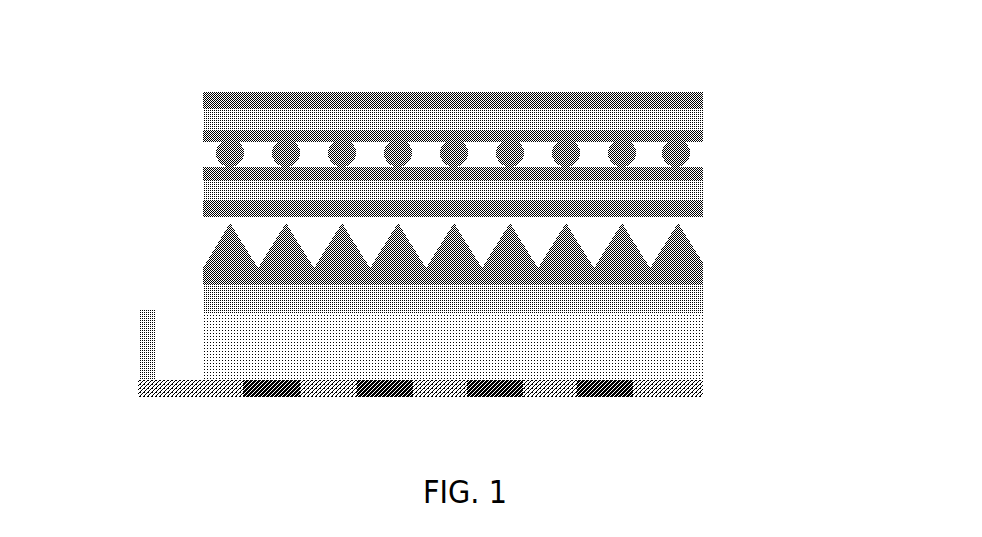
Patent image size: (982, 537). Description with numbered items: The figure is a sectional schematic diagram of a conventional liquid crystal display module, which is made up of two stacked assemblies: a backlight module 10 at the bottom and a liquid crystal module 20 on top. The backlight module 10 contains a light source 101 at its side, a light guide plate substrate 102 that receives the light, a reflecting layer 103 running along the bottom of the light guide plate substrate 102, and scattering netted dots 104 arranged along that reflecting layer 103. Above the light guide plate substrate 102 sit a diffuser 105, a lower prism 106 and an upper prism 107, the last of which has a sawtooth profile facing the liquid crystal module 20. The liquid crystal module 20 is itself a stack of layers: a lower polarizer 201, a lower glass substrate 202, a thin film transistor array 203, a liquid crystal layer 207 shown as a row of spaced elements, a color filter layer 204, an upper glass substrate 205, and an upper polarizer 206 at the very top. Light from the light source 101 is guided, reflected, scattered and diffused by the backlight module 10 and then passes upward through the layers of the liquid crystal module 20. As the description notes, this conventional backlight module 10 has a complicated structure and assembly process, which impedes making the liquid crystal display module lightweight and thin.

The backlight module 10 is at (812, 265).
The liquid crystal module 20 is at (810, 28).
The light source 101 is at (140, 348).
The light guide plate substrate 102 is at (703, 347).
The reflecting layer 103 is at (138, 388).
The scattering netted dots 104 is at (250, 393).
The diffuser 105 is at (703, 308).
The lower prism 106 is at (703, 292).
The upper prism 107 is at (703, 258).
The lower polarizer 201 is at (703, 210).
The lower glass substrate 202 is at (703, 188).
The thin film transistor (TFT) array 203 is at (703, 173).
The color filter (CF) layer 204 is at (703, 136).
The upper glass substrate 205 is at (703, 116).
The upper polarizer 206 is at (703, 92).
The liquid crystal layer 207 is at (690, 156).